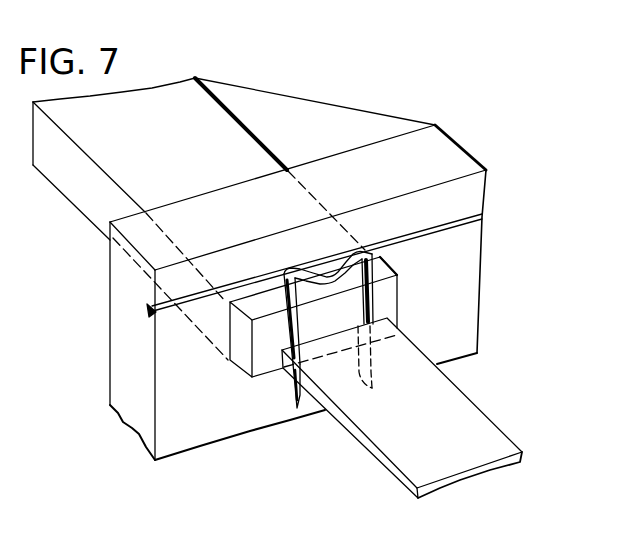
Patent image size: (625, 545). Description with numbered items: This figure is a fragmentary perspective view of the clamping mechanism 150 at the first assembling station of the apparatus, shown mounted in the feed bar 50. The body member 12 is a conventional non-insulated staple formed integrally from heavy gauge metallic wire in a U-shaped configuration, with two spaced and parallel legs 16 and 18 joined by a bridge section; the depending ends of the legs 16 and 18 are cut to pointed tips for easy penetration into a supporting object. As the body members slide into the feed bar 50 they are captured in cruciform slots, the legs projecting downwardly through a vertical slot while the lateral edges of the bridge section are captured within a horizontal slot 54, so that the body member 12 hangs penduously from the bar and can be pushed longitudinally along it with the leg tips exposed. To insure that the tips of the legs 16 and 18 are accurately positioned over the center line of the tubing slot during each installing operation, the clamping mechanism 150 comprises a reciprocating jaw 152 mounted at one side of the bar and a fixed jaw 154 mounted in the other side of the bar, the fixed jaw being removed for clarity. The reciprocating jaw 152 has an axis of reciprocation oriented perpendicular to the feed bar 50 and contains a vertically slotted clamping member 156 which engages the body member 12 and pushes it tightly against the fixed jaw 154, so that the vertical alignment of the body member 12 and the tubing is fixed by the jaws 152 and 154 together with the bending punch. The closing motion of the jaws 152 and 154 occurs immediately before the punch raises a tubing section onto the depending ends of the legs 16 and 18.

The body member 12 is at (318, 265).
The leg 16 is at (292, 394).
The leg 18 is at (376, 374).
The feed bar 50 is at (445, 155).
The horizontal slot 54 is at (481, 222).
The clamping mechanism 150 is at (324, 116).
The reciprocating jaw 152 is at (217, 121).
The fixed jaw 154 is at (482, 437).
The clamping member 156 is at (387, 296).